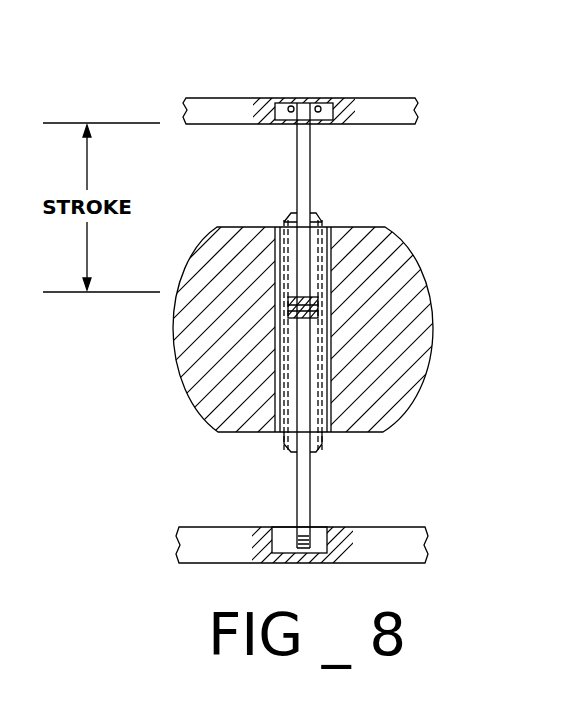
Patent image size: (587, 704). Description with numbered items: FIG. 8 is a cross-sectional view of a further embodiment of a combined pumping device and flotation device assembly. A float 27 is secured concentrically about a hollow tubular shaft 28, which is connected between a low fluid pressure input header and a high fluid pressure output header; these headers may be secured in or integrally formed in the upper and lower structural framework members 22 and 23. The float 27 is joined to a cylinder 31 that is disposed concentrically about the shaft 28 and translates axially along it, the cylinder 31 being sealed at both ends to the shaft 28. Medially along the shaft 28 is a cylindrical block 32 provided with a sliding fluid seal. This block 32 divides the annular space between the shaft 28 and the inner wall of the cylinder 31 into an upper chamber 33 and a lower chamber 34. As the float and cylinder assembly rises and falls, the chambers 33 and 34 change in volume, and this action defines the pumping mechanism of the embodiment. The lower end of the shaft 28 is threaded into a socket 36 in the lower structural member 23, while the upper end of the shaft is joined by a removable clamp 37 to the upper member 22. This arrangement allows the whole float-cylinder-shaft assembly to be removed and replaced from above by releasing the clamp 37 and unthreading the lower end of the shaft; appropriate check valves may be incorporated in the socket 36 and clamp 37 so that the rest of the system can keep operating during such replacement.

The structural framework member 22 is at (208, 108).
The structural framework member 23 is at (190, 528).
The float 27 is at (433, 305).
The hollow tubular shaft 28 is at (313, 157).
The cylinder 31 is at (282, 220).
The cylindrical block 32 is at (318, 310).
The upper chamber 33 is at (325, 220).
The lower chamber 34 is at (313, 440).
The socket 36 is at (283, 535).
The removable clamp 37 is at (290, 100).